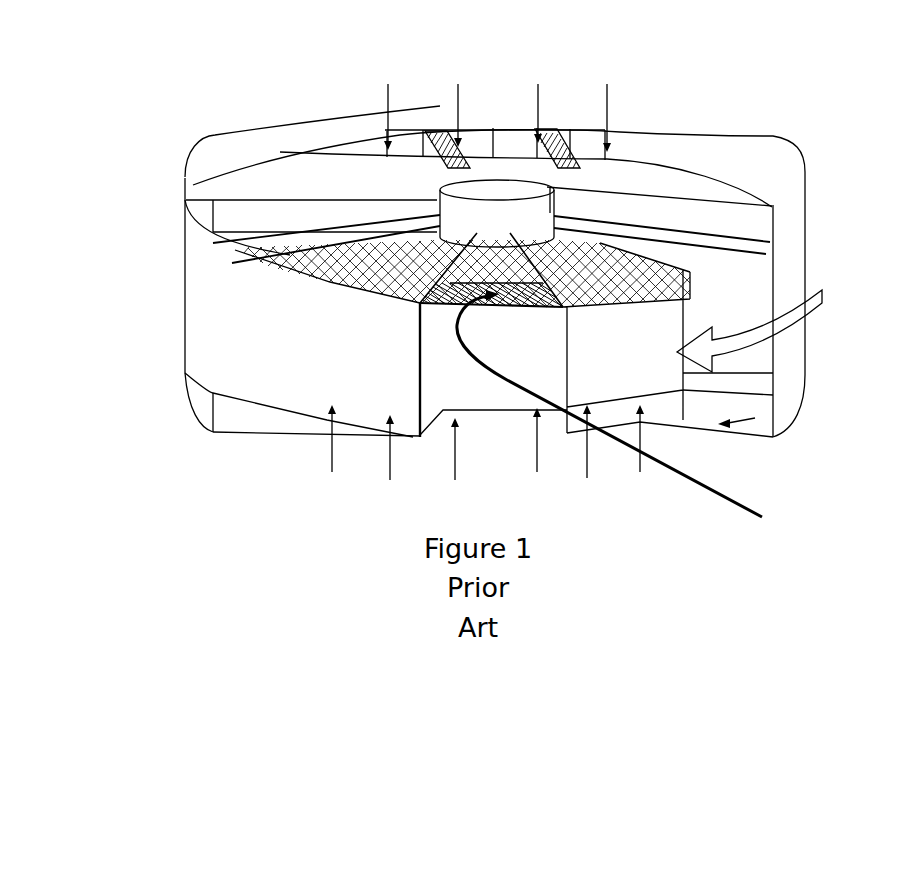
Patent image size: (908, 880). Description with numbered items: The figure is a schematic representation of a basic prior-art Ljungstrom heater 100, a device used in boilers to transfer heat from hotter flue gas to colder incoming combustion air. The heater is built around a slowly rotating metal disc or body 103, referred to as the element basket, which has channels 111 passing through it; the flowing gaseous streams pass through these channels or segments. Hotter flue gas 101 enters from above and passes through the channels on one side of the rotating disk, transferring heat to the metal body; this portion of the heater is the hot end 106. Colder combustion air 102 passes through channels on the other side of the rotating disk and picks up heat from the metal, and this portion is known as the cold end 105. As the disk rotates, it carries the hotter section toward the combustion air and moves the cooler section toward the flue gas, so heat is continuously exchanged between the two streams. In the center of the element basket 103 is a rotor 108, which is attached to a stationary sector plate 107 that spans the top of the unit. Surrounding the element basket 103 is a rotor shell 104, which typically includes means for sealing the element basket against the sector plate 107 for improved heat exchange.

The Ljungstrom heater 100 is at (196, 86).
The hotter flue gas 101 is at (729, 126).
The colder combustion air 102 is at (647, 450).
The element basket 103 is at (692, 351).
The rotor shell 104 is at (314, 307).
The cold end 105 is at (322, 422).
The hot end 106 is at (495, 143).
The stationary sector plate 107 is at (478, 214).
The rotor 108 is at (493, 243).
The channels 111 is at (628, 411).